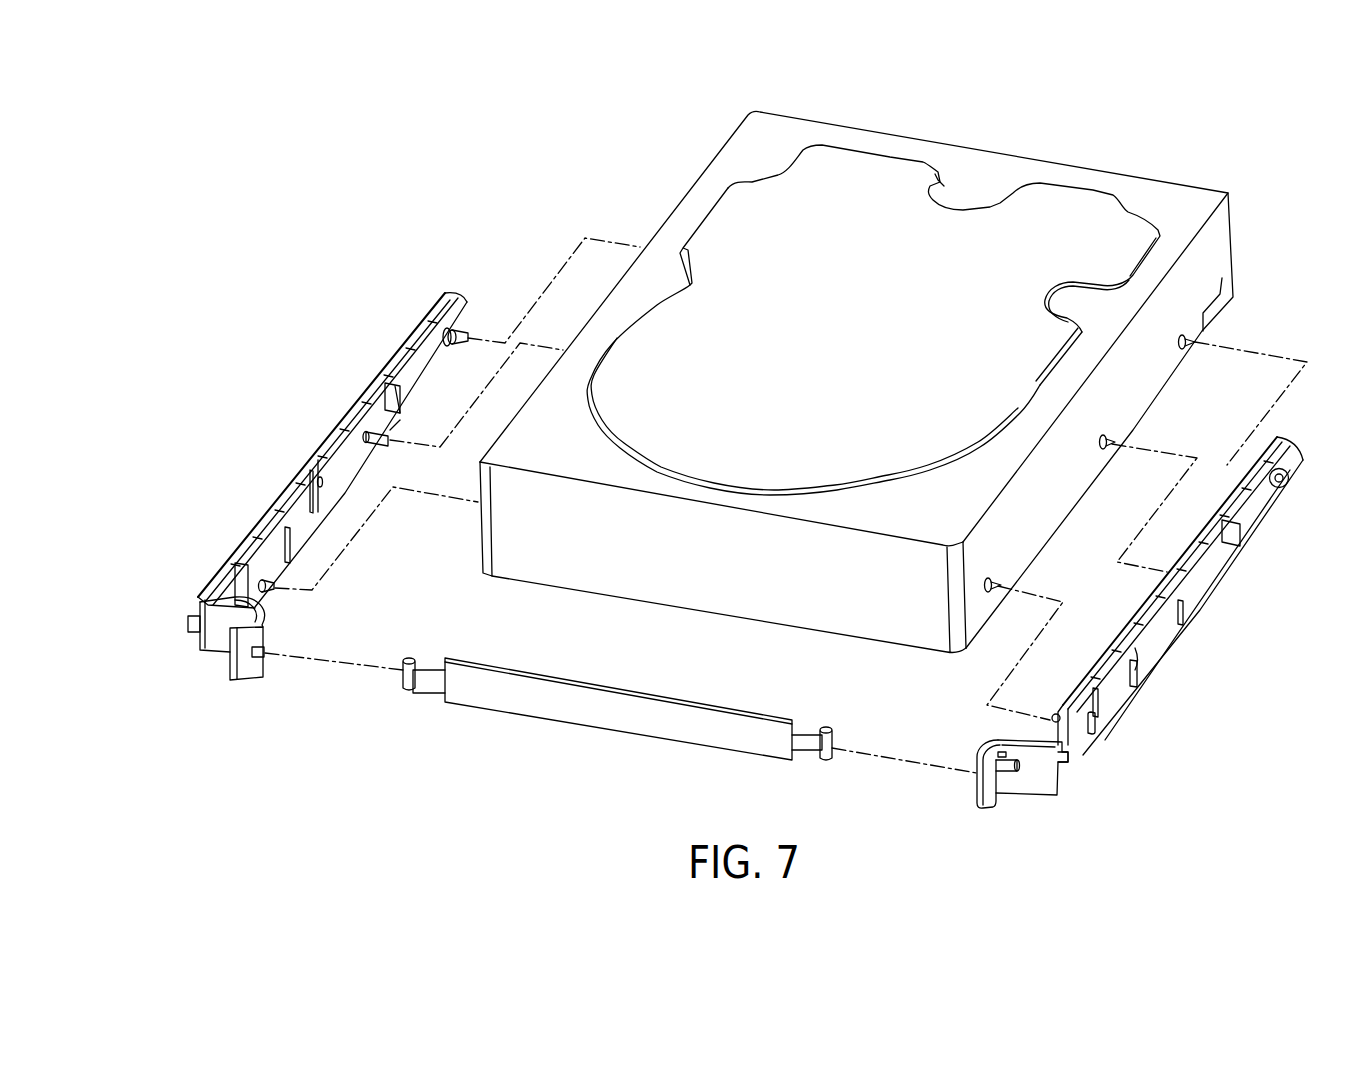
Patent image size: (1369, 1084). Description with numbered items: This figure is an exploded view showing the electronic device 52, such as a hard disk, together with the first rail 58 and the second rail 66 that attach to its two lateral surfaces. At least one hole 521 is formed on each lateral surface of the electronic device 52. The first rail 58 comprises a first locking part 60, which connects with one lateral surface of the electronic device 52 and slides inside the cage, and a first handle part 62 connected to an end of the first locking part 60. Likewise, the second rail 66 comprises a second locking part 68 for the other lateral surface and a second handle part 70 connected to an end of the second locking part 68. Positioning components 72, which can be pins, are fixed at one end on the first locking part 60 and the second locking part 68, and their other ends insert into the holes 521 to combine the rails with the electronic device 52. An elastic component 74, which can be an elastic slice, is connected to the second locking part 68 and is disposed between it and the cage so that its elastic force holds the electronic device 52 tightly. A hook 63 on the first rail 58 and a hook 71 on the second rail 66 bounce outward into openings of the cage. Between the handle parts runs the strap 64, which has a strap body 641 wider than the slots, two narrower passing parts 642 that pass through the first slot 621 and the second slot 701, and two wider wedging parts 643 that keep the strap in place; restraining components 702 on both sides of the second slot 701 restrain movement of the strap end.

The electronic device 52 is at (786, 442).
The hole 521 is at (1190, 346).
The first rail 58 is at (295, 522).
The first locking part 60 is at (237, 553).
The first handle part 62 is at (223, 630).
The hook 63 is at (190, 614).
The first slot 621 is at (266, 656).
The positioning component 72 is at (478, 337).
The strap 64 is at (608, 751).
The strap body 641 is at (615, 717).
The passing part 642 is at (428, 680).
The wedging part 643 is at (838, 822).
The second rail 66 is at (1114, 647).
The second locking part 68 is at (1180, 609).
The second handle part 70 is at (1059, 764).
The second slot 701 is at (1012, 760).
The restraining component 702 is at (1008, 740).
The hook 71 is at (1062, 767).
The elastic component 74 is at (1100, 719).